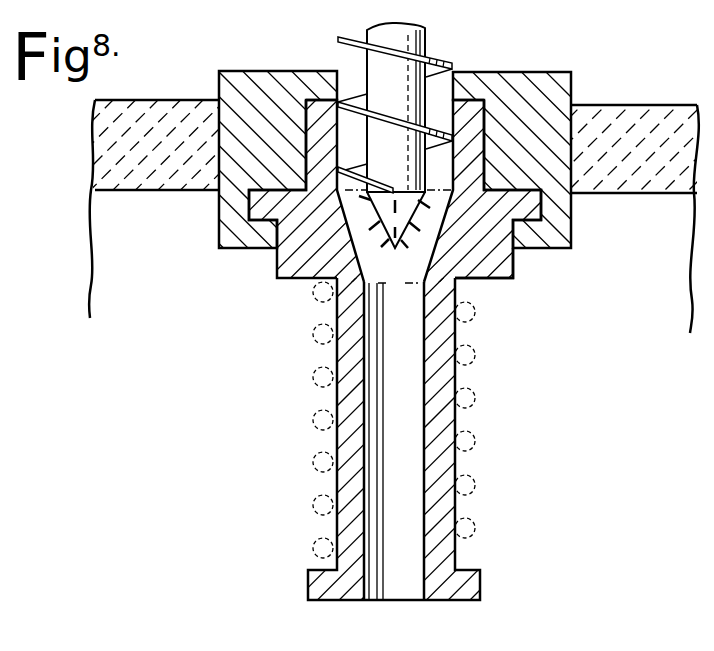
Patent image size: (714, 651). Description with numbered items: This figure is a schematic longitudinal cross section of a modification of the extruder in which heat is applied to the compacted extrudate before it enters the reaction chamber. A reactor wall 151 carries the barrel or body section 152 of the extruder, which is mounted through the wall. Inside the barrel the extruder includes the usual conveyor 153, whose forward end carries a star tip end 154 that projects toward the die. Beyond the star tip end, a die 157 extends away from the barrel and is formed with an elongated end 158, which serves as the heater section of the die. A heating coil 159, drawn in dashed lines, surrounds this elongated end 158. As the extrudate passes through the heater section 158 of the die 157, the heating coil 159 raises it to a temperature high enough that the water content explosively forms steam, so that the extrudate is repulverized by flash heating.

The reactor wall 151 is at (623, 106).
The barrel or body section 152 is at (520, 81).
The conveyor 153 is at (426, 43).
The star tip end 154 is at (350, 230).
The die 157 is at (503, 262).
The elongated end (heater section) 158 is at (440, 427).
The heating coil 159 is at (468, 352).